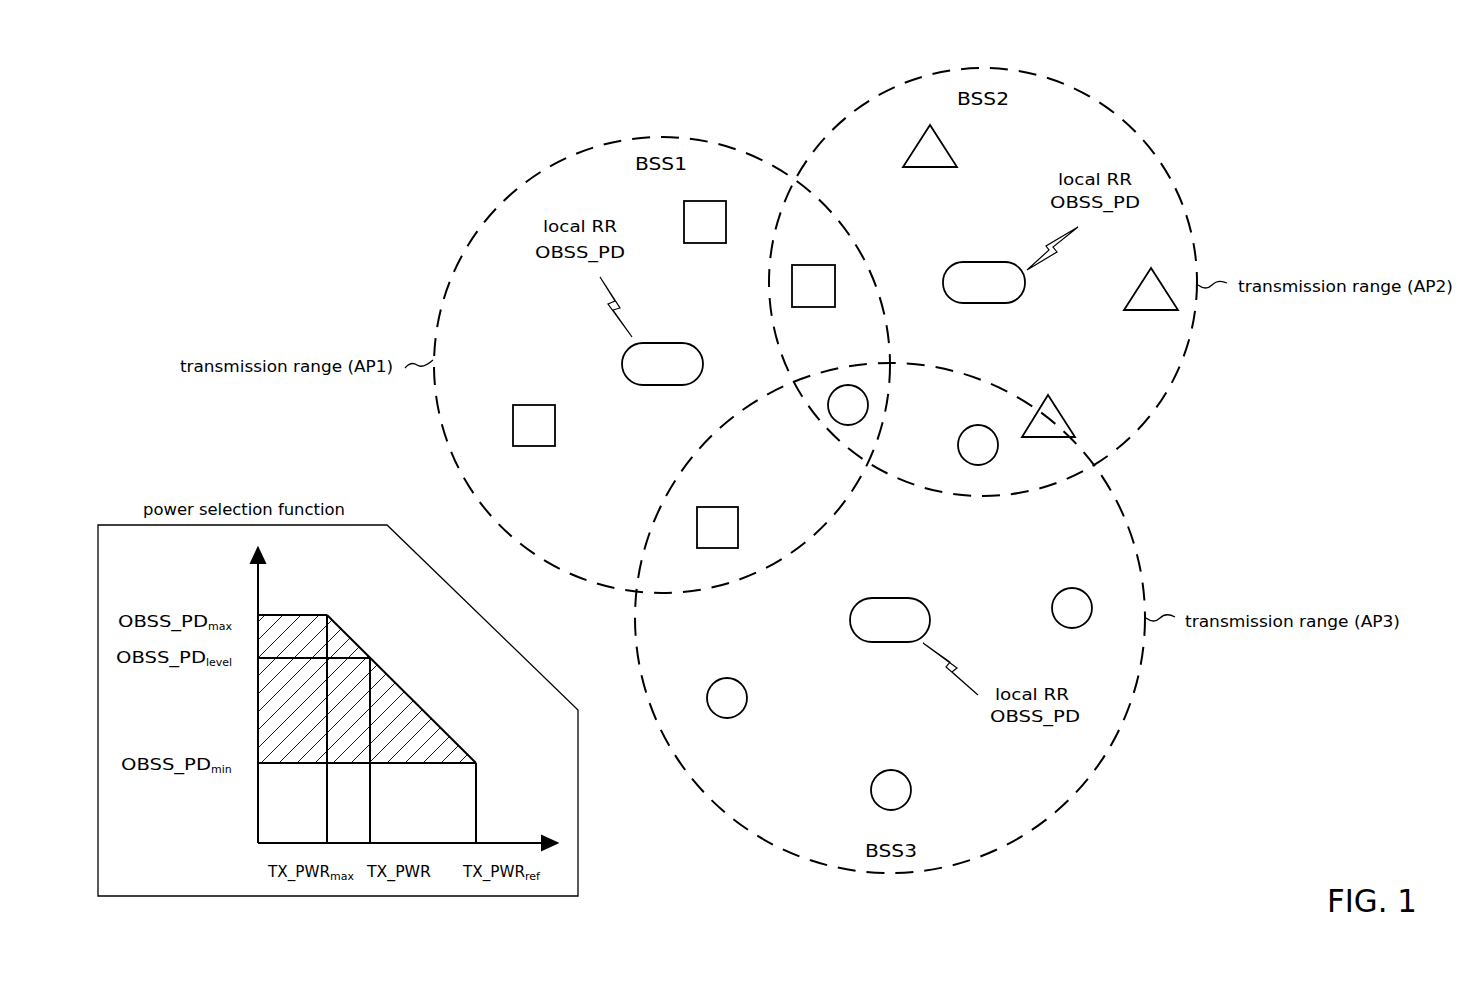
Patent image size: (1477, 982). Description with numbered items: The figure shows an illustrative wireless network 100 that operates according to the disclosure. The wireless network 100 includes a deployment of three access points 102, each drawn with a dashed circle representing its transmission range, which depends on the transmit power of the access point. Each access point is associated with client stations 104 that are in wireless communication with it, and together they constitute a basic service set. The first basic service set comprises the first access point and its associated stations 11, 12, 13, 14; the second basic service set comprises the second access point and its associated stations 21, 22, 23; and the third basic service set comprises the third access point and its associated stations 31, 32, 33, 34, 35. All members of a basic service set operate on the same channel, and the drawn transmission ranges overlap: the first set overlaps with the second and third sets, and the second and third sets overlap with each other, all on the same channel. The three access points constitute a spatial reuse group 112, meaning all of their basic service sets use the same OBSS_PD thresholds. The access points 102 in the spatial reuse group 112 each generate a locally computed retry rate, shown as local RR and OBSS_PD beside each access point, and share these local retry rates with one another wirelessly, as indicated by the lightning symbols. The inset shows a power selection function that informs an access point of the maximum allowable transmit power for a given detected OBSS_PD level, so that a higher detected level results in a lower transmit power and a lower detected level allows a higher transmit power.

The wireless network 100 is at (1242, 72).
The spatial reuse group 112 is at (827, 460).
The access point 102 is at (622, 362).
The client station 104 is at (732, 421).
The station 11 is at (534, 425).
The station 12 is at (705, 222).
The station 13 is at (813, 286).
The station 14 is at (717, 527).
The station 21 is at (930, 146).
The station 22 is at (1151, 289).
The station 23 is at (1048, 416).
The station 31 is at (848, 405).
The station 32 is at (978, 445).
The station 33 is at (1072, 608).
The station 34 is at (891, 790).
The station 35 is at (727, 698).